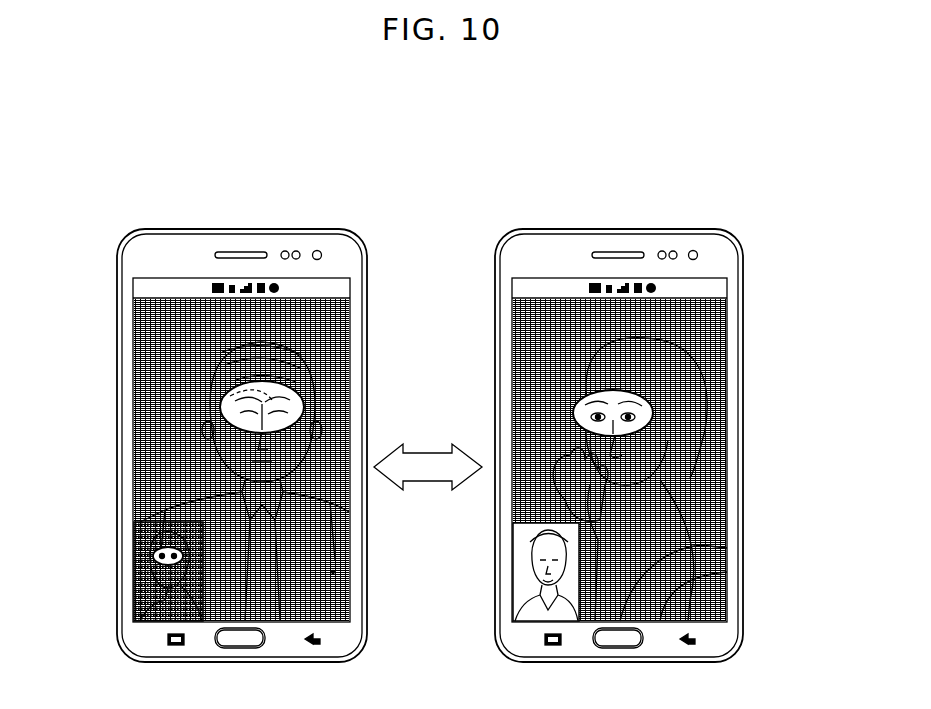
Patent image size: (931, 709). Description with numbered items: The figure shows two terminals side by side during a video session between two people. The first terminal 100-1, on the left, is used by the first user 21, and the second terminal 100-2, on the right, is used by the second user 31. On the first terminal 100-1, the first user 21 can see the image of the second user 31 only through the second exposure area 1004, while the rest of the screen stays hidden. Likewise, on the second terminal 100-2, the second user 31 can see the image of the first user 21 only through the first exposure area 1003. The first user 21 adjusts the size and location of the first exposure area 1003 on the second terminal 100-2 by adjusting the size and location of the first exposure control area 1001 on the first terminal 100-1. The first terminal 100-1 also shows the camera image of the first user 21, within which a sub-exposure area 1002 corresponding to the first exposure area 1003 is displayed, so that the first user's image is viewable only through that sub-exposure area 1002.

The first terminal 100-1 is at (424, 433).
The second terminal 100-2 is at (654, 433).
The first exposure control area 1001 is at (210, 410).
The second exposure area 1004 is at (207, 385).
The sub-exposure area 1002 is at (424, 502).
The first exposure area 1003 is at (660, 413).
The first user 21 is at (143, 573).
The second user 31 is at (333, 572).